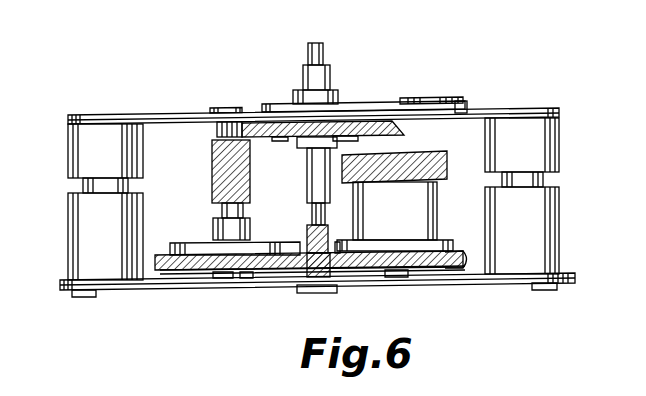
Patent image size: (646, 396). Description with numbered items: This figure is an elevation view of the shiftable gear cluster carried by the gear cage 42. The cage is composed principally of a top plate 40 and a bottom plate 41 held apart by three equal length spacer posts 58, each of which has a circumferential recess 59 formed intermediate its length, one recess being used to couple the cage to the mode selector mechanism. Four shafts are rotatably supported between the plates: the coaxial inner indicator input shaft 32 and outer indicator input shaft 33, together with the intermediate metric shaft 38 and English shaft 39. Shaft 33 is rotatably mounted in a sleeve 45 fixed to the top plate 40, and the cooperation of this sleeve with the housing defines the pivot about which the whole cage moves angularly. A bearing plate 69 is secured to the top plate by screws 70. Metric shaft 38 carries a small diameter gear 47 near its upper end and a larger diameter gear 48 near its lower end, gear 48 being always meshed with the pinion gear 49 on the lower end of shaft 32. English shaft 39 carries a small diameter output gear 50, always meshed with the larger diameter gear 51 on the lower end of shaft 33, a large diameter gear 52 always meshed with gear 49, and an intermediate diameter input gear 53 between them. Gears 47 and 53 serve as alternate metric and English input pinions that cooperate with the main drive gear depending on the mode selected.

The inner indicator input shaft 32 is at (326, 45).
The outer indicator input shaft 33 is at (329, 75).
The metric shaft 38 is at (311, 204).
The English shaft 39 is at (413, 223).
The top plate 40 is at (158, 99).
The bottom plate 41 is at (147, 287).
The gear cage 42 is at (498, 42).
The sleeve 45 is at (292, 99).
The small diameter gear 47 is at (213, 158).
The larger diameter gear 48 is at (196, 215).
The pinion gear 49 is at (333, 274).
The small diameter output gear 50 is at (402, 128).
The larger diameter gear 51 is at (252, 108).
The large diameter gear 52 is at (466, 262).
The intermediate diameter input gear 53 is at (448, 172).
The spacer posts 58 is at (68, 232).
The circumferential recess 59 is at (547, 175).
The bearing plate 69 is at (468, 102).
The screws 70 is at (411, 98).